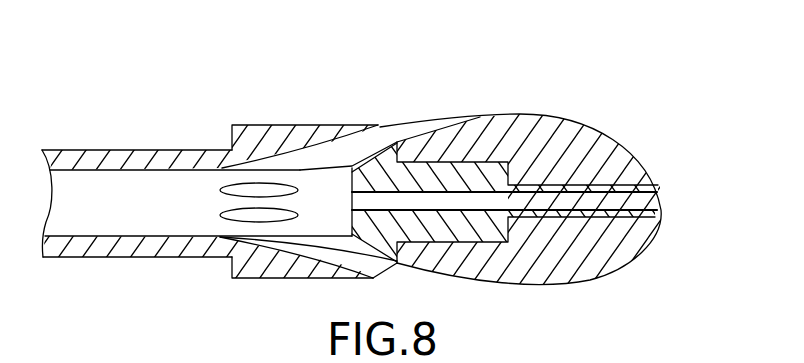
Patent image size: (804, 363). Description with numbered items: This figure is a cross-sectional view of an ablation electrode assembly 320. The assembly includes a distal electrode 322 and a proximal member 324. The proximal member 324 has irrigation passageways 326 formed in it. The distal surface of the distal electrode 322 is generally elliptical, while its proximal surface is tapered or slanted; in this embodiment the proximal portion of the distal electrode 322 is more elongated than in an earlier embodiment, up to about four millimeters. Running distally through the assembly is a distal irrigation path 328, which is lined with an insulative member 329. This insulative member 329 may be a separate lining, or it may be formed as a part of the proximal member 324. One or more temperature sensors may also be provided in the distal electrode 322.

The ablation electrode assembly 320 is at (388, 152).
The distal electrode 322 is at (597, 143).
The proximal member 324 is at (260, 133).
The irrigation passageways 326 is at (372, 138).
The distal irrigation path 328 is at (622, 203).
The insulative member 329 is at (617, 212).